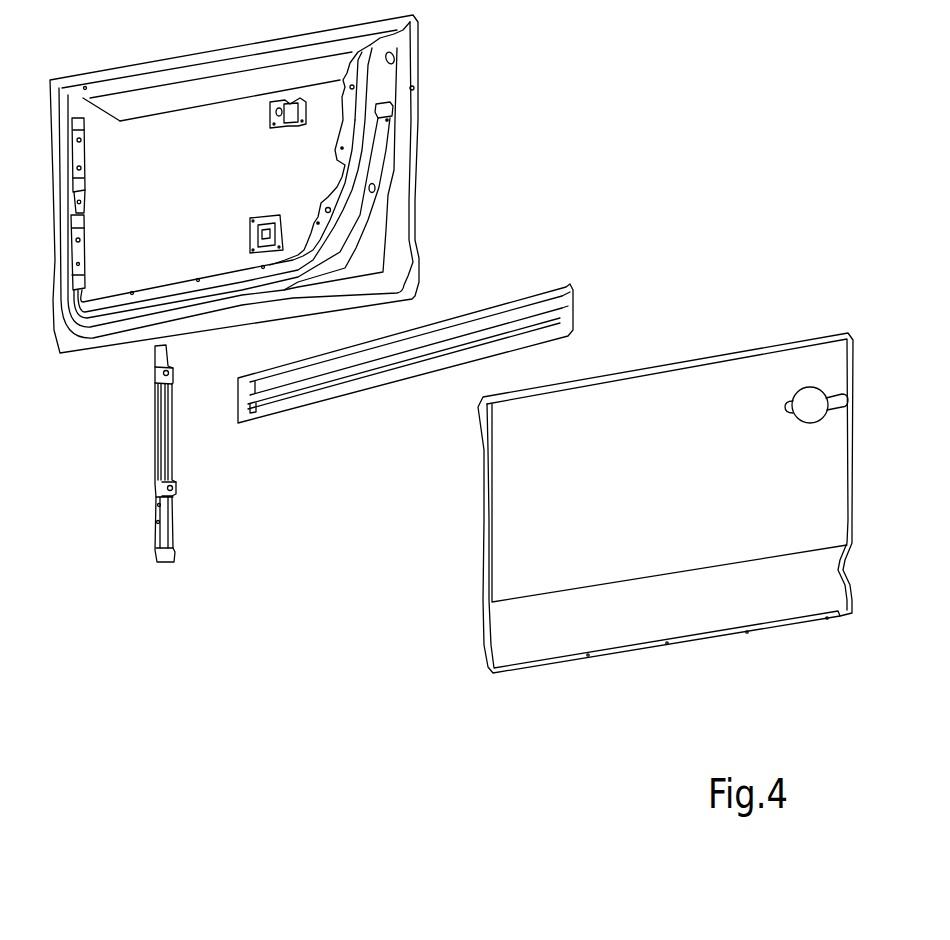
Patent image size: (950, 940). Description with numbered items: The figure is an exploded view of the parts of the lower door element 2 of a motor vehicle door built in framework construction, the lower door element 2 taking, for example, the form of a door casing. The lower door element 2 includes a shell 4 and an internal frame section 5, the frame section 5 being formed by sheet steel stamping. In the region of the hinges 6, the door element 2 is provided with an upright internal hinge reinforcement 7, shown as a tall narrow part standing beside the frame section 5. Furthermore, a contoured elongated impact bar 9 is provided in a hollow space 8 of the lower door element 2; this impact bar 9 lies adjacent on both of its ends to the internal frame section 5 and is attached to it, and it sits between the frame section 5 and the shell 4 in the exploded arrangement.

The lower door element 2 is at (632, 161).
The shell 4 is at (813, 487).
The internal frame section 5 is at (397, 200).
The hinges 6 is at (85, 143).
The internal hinge reinforcement 7 is at (160, 445).
The hollow space 8 is at (239, 171).
The impact bar 9 is at (388, 363).